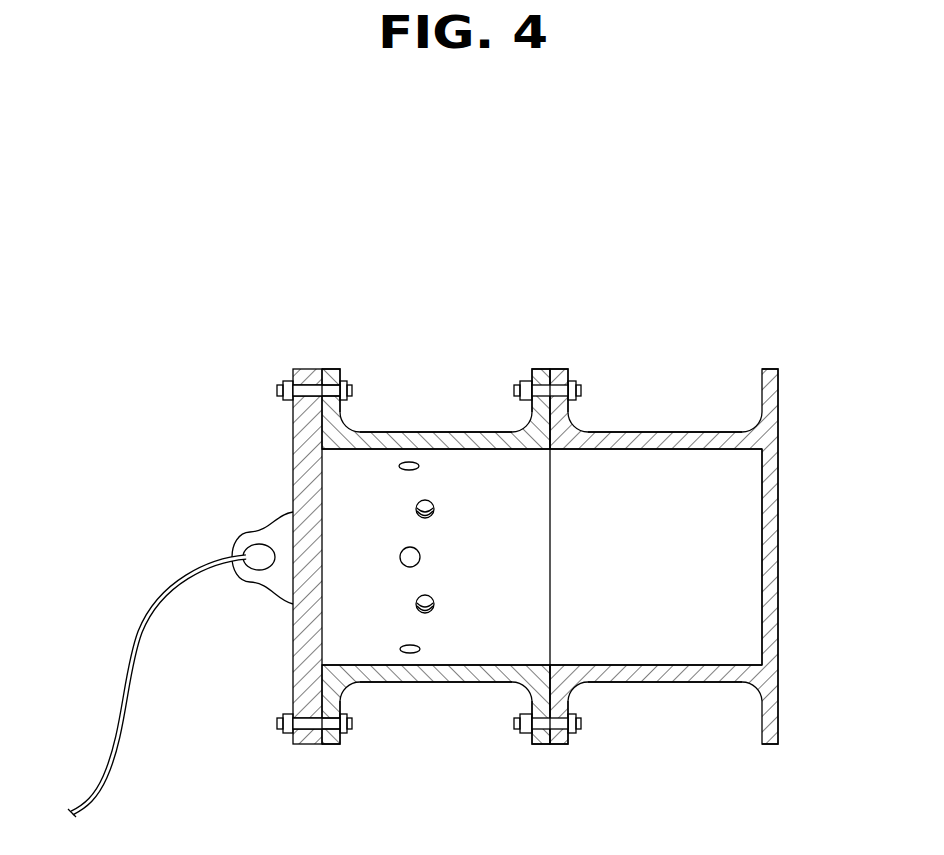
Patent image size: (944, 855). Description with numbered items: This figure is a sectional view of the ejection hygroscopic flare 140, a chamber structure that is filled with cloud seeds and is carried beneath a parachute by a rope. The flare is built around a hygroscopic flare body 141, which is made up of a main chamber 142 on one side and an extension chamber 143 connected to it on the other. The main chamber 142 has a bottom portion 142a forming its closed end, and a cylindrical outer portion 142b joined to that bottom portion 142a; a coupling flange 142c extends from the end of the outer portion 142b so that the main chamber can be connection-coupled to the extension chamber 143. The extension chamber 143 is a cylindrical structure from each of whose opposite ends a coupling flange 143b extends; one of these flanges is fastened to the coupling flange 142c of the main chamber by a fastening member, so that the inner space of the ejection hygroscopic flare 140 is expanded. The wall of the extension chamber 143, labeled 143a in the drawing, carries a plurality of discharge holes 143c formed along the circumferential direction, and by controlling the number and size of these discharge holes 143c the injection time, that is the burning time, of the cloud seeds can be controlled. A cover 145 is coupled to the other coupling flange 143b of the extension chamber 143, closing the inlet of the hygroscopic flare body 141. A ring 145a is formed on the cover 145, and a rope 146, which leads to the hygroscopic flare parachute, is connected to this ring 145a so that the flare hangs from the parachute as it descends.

The ejection hygroscopic flare 140 is at (539, 208).
The hygroscopic flare body 141 is at (590, 312).
The main chamber 142 is at (649, 418).
The bottom portion 142a is at (779, 497).
The outer portion 142b is at (680, 683).
The coupling flange 142c is at (562, 745).
The extension chamber 143 is at (451, 418).
The wall of first pipe 143a is at (374, 432).
The coupling flange 143b is at (331, 376).
The discharge holes 143c is at (430, 614).
The cover 145 is at (292, 437).
The ring 145a is at (251, 532).
The rope 146 is at (133, 717).